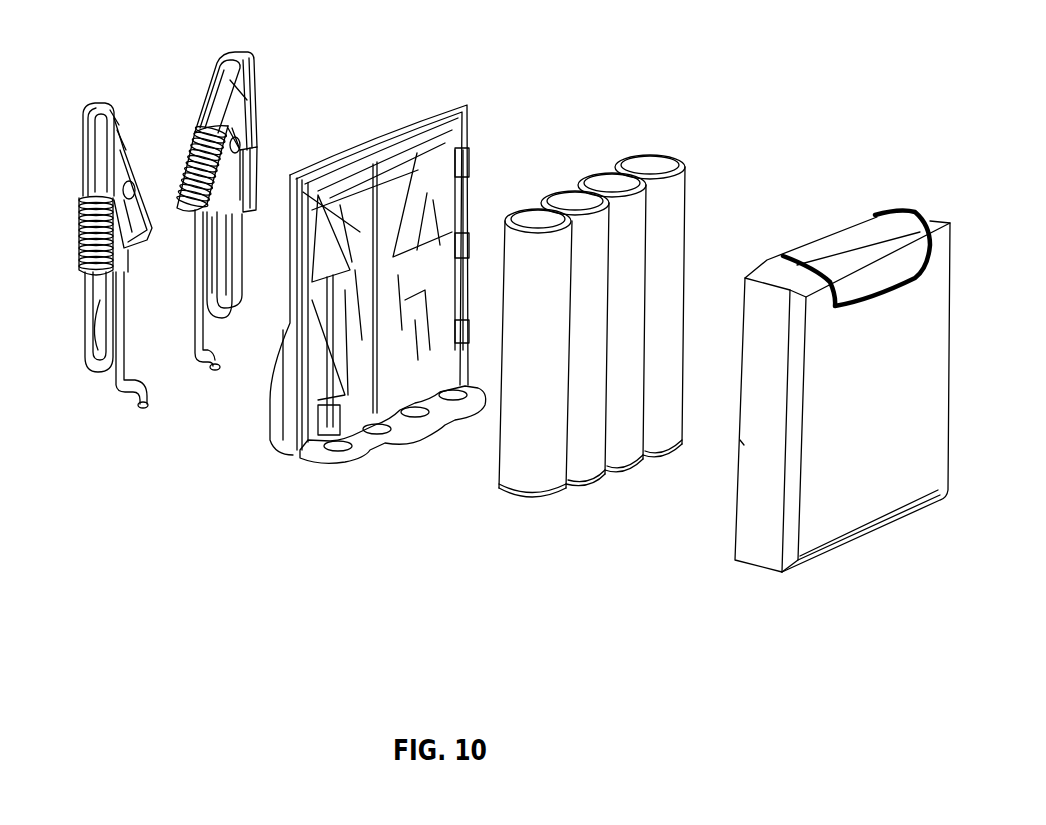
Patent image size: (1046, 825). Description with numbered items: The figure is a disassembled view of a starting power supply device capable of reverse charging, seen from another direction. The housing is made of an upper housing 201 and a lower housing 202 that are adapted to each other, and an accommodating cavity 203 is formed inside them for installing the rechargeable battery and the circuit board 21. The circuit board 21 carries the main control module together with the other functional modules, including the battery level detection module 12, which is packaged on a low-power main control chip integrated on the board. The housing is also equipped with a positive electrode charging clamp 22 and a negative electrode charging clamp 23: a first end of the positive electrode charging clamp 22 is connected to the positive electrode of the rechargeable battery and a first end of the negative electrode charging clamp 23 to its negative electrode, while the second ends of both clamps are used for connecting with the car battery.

The battery level detection module 12 is at (520, 428).
The circuit board 21 is at (302, 453).
The positive electrode charging clamp 22 is at (212, 363).
The negative electrode charging clamp 23 is at (78, 318).
The upper housing 201 is at (279, 386).
The lower housing 202 is at (758, 533).
The accommodating cavity 203 is at (663, 493).